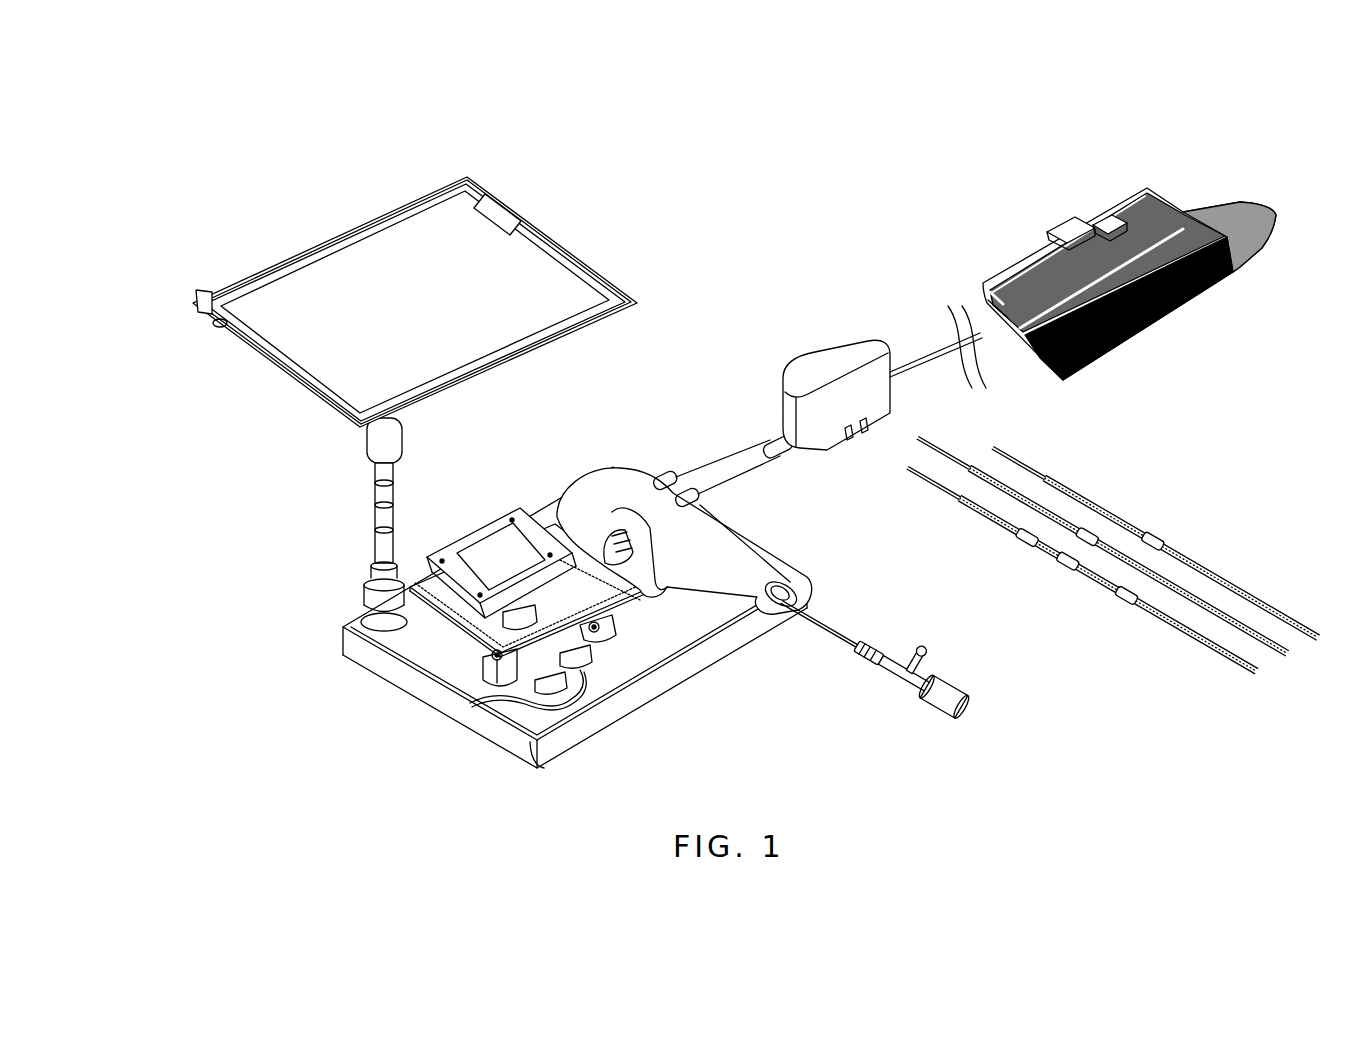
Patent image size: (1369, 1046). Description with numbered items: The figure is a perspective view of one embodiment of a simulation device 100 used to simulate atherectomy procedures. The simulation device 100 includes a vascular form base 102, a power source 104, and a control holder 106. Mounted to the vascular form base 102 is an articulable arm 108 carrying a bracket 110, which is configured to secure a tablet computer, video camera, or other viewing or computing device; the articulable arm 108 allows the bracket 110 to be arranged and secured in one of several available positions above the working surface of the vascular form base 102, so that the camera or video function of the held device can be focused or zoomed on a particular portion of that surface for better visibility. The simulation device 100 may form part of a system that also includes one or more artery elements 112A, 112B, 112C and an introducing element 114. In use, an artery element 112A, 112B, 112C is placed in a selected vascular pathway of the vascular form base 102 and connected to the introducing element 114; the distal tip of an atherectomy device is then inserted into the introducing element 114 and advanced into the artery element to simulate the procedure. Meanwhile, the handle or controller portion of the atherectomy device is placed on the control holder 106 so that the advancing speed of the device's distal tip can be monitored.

The simulation device 100 is at (840, 124).
The vascular form base 102 is at (440, 786).
The power source 104 is at (844, 478).
The control holder 106 is at (1148, 357).
The articulable arm 108 is at (402, 500).
The bracket 110 is at (598, 250).
The artery element 112A is at (1148, 621).
The artery element 112B is at (1215, 621).
The artery element 112C is at (1262, 597).
The introducing element 114 is at (866, 683).